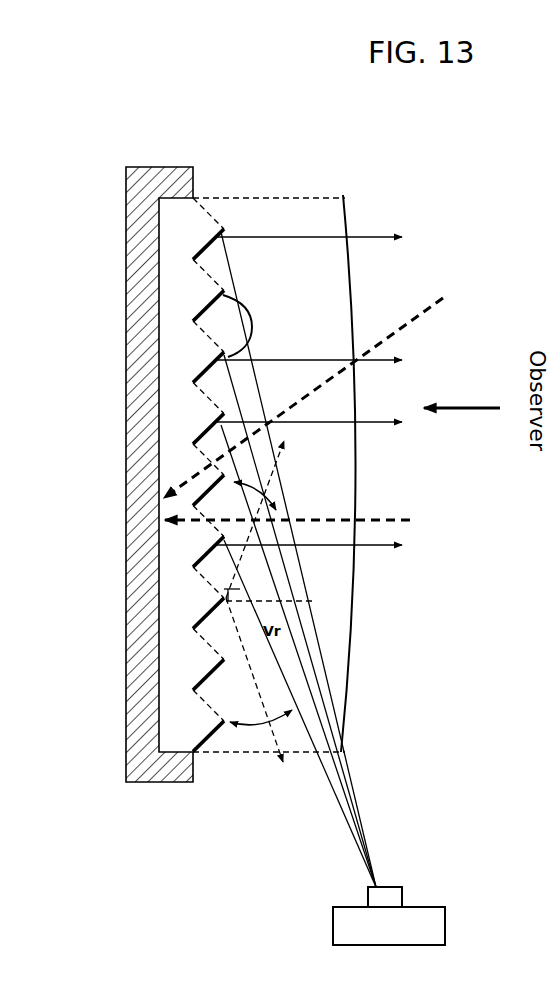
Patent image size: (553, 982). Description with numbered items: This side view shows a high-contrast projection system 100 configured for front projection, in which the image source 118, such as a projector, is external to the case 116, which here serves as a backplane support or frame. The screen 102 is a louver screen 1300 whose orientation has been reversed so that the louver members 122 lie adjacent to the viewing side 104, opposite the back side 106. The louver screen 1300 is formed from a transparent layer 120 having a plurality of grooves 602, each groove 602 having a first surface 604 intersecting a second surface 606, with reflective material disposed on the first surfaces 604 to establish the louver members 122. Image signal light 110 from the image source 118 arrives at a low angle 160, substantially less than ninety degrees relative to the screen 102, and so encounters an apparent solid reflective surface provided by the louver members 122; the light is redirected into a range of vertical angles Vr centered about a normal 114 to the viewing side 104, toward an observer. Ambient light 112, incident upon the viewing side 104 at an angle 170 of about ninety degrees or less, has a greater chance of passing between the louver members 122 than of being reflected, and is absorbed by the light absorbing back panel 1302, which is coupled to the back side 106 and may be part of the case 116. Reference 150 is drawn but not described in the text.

The high-contrast projection system 100 is at (173, 144).
The case 116 is at (142, 167).
The louver screen 1300 is at (229, 227).
The first surface 604 is at (203, 307).
The second surface 606 is at (210, 343).
The groove 602 is at (254, 327).
The louver member 122 is at (218, 296).
The light absorbing back panel 1302 is at (143, 425).
The screen 102 is at (355, 489).
The ambient light 112 is at (317, 403).
The angle 170 is at (266, 490).
The reflective surface 150 is at (226, 598).
The normal 114 is at (285, 598).
The back side 106 is at (150, 632).
The transparent layer 120 is at (166, 688).
The viewing side 104 is at (234, 728).
The angle 160 is at (264, 724).
The image signal light 110 is at (360, 820).
The image source 118 is at (389, 916).